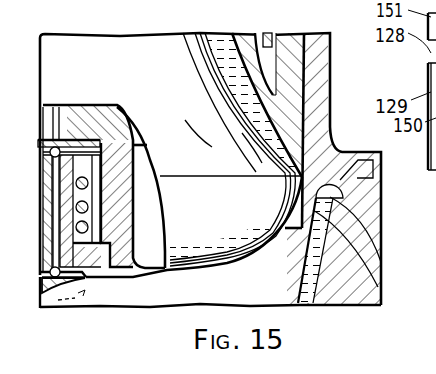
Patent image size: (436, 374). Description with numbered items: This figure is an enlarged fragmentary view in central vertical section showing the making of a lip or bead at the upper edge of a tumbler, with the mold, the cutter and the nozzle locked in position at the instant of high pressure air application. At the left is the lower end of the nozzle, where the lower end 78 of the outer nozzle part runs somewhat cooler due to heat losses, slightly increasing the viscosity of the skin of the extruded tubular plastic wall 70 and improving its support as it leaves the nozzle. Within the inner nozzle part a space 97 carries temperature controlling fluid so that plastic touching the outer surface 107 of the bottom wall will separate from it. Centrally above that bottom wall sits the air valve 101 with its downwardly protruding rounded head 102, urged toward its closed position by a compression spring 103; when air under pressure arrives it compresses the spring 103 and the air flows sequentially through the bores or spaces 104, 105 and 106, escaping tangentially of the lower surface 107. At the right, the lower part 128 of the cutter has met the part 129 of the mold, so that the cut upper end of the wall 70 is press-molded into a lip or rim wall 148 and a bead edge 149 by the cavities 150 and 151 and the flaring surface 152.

The lower end of the outer nozzle part 78 is at (331, 78).
The cavity 151 is at (331, 141).
The lower part of the cutter 128 is at (342, 170).
The bead edge 149 is at (340, 193).
The cavity 150 is at (352, 210).
The part of the mold 129 is at (383, 246).
The flaring surface 152 is at (383, 285).
The lip or rim wall 148 is at (320, 212).
The outer surface of the bottom wall 107 is at (213, 267).
The tubular plastic wall 70 is at (298, 306).
The space 97 is at (147, 210).
The compression spring 103 is at (96, 283).
The rounded head 102 is at (86, 281).
The bore or space 105 is at (38, 164).
The bore or space 104 is at (97, 107).
The air valve 101 is at (40, 237).
The bore or space 106 is at (40, 277).